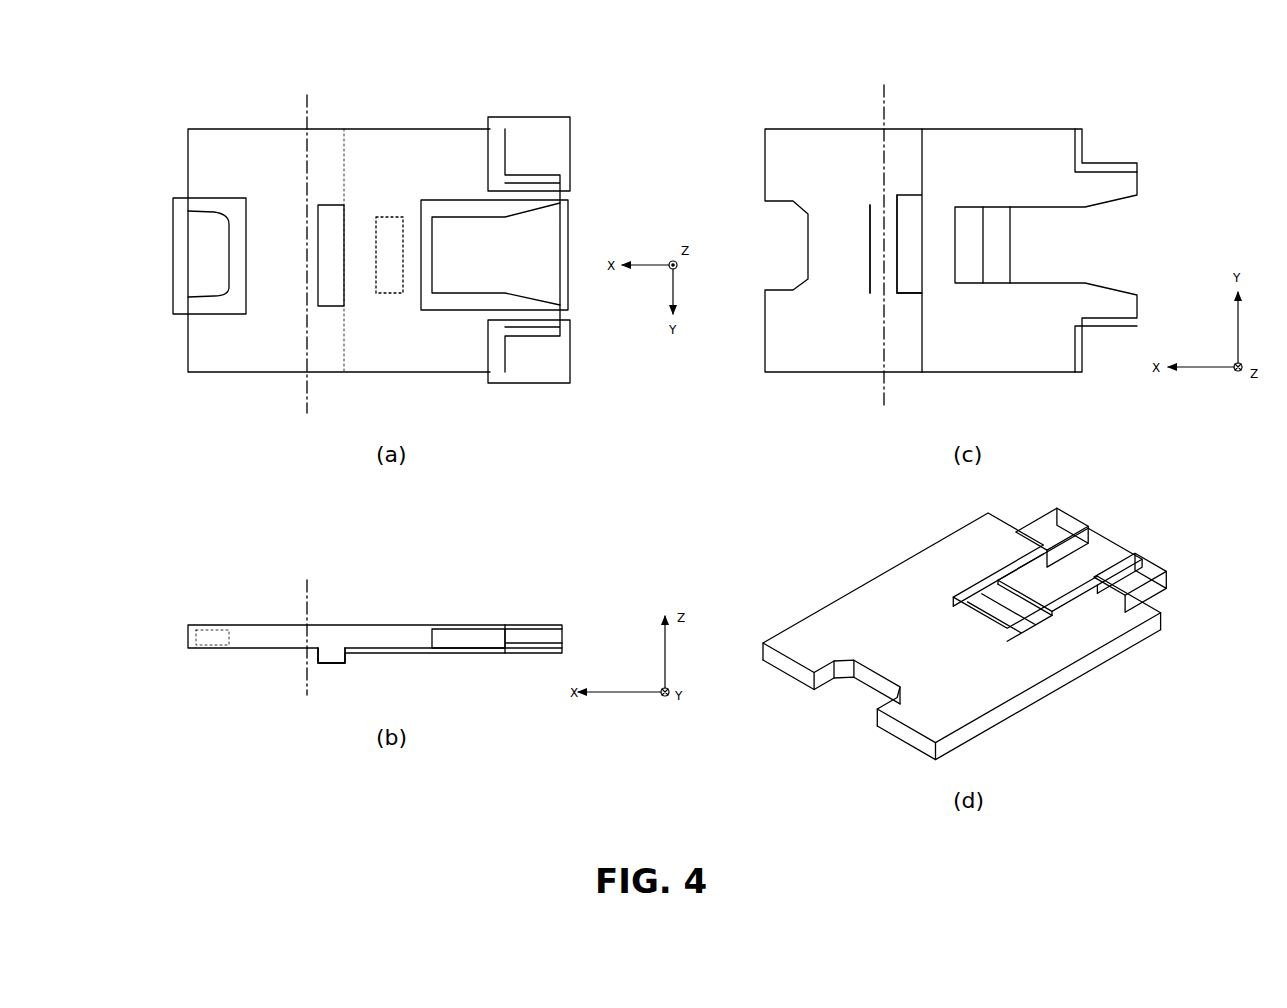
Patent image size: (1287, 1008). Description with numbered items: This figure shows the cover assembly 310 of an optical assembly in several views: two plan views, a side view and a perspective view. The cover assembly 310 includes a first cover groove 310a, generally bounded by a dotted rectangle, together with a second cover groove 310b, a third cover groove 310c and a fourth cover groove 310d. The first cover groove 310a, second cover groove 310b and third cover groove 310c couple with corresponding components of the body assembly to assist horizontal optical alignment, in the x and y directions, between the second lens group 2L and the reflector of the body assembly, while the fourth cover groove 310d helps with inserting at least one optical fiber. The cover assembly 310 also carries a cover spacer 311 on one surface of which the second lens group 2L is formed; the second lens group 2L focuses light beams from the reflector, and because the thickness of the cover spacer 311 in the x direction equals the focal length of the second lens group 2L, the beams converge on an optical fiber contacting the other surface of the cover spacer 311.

The cover assembly 310 is at (272, 75).
The first cover groove 310a is at (173, 256).
The second cover groove 310b is at (569, 348).
The third cover groove 310c is at (533, 117).
The fourth cover groove 310d is at (569, 224).
The cover spacer 311 is at (912, 294).
The second lens group 2L is at (870, 242).